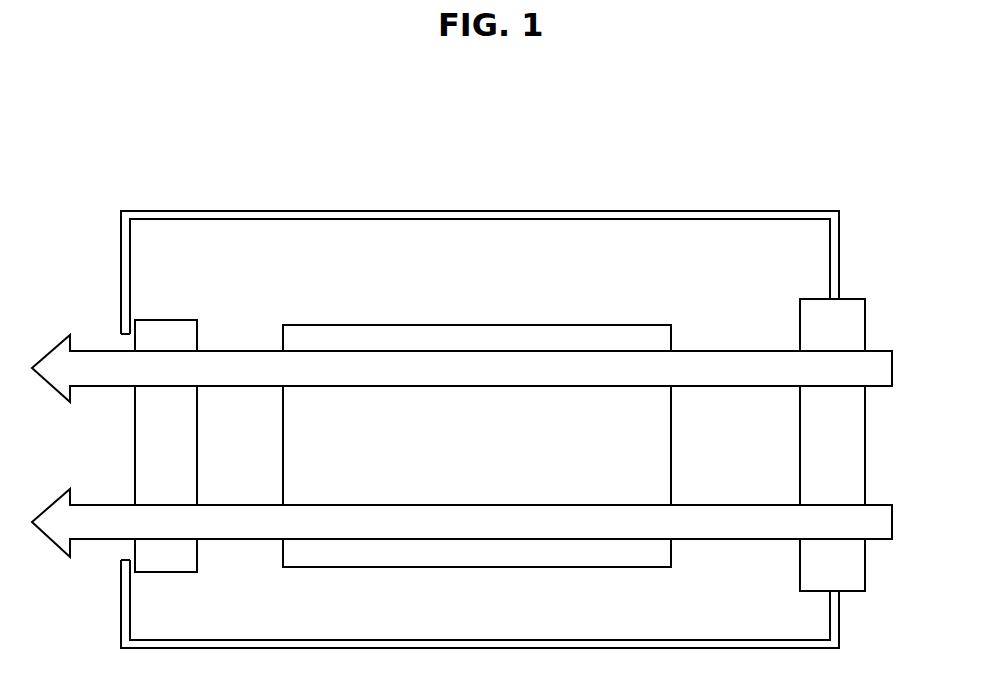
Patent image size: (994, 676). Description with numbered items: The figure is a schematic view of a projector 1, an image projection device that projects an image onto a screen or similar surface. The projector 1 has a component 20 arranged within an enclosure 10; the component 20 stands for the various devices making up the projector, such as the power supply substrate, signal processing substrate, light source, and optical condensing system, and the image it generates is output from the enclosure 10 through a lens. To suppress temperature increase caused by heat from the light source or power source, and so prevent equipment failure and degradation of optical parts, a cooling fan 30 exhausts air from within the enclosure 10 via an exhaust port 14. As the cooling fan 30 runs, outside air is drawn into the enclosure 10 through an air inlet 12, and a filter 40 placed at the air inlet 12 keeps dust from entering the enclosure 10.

The projector 1 is at (800, 115).
The enclosure 10 is at (751, 210).
The air inlet 12 is at (870, 448).
The exhaust port 14 is at (122, 548).
The component 20 is at (611, 325).
The cooling fan 30 is at (166, 320).
The filter 40 is at (855, 299).